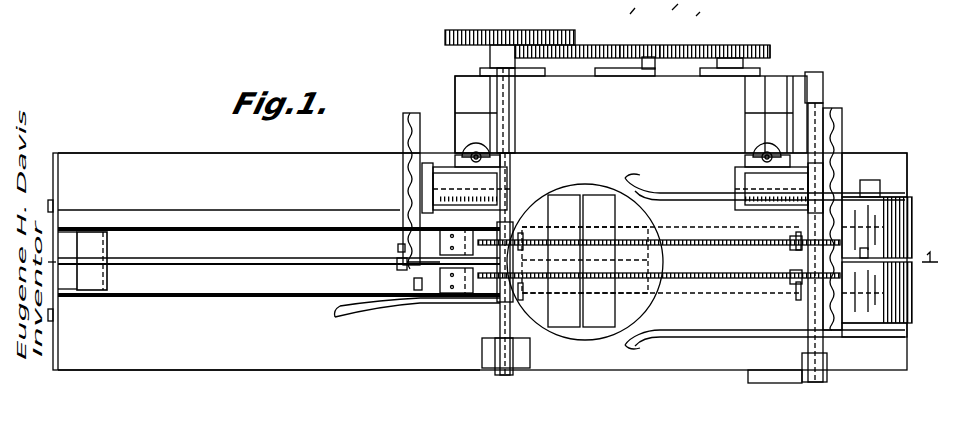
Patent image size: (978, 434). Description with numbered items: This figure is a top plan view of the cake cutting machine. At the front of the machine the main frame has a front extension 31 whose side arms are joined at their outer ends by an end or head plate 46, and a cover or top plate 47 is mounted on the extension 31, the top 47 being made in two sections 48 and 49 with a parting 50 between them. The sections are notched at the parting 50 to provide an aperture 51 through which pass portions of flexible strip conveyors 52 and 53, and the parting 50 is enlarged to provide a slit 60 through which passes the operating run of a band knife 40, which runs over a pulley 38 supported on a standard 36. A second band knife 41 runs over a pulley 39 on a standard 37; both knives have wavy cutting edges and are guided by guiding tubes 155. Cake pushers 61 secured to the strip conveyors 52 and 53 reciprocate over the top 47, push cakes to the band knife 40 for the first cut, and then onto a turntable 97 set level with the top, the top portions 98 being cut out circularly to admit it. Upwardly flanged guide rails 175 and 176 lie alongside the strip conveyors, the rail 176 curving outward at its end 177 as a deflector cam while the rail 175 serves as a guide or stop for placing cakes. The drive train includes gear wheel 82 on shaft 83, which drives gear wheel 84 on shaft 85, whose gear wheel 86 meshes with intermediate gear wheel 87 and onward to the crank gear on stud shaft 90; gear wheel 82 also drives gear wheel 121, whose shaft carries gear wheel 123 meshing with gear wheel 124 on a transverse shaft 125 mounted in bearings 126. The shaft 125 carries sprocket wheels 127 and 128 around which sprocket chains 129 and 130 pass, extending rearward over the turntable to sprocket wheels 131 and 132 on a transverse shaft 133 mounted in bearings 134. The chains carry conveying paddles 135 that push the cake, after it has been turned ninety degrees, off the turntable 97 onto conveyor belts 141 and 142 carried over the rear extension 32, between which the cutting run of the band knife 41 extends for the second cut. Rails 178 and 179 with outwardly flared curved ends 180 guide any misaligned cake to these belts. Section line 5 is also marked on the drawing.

The front extension 31 is at (143, 153).
The cover or top plate 47 is at (239, 143).
The top plate section 49 is at (229, 192).
The top plate section 48 is at (269, 348).
The end or head plate 46 is at (54, 367).
The guide rail 175 is at (240, 221).
The flexible strip conveyor 53 is at (282, 232).
The parting 50 is at (170, 262).
The aperture 51 is at (78, 240).
The flexible strip conveyor 52 is at (292, 297).
The section line 5 is at (490, 249).
The band knife 40 is at (411, 113).
The pulley 38 is at (404, 134).
The slit 60 is at (396, 262).
The standard 36 is at (510, 162).
The standard 37 is at (740, 153).
The cake pusher 61 is at (478, 236).
The sprocket wheel 127 is at (488, 296).
The guiding tube 155 is at (418, 290).
The guide rail 176 is at (376, 306).
The curved end 177 is at (345, 315).
The bearing 126 is at (515, 103).
The transversely positioned shaft 125 is at (510, 325).
The sprocket wheel 128 is at (505, 235).
The conveying paddle 135 is at (522, 238).
The sprocket chain 130 is at (662, 242).
The sprocket chain 129 is at (665, 284).
The turntable 97 is at (578, 188).
The top portion 98 is at (618, 160).
The rail 178 is at (698, 193).
The rail 179 is at (698, 338).
The outwardly flared curved end 180 is at (655, 182).
The conveyor belt 141 is at (926, 217).
The conveyor belt 142 is at (926, 281).
The rear extension 32 is at (874, 175).
The transversely extending shaft 133 is at (823, 311).
The bearing 134 is at (824, 90).
The band knife 41 is at (843, 130).
The pulley 39 is at (844, 148).
The sprocket wheel 132 is at (795, 238).
The sprocket wheel 131 is at (800, 288).
The gear wheel 124 is at (460, 32).
The gear wheel 123 is at (568, 44).
The gear wheel 121 is at (540, 56).
The shaft 83 is at (622, 45).
The gear wheel 82 is at (660, 45).
The shaft 85 is at (727, 44).
The gear wheel 84 is at (762, 50).
The stud shaft 90 is at (641, 7).
The intermediate gear wheel 87 is at (676, 5).
The gear wheel 86 is at (698, 8).